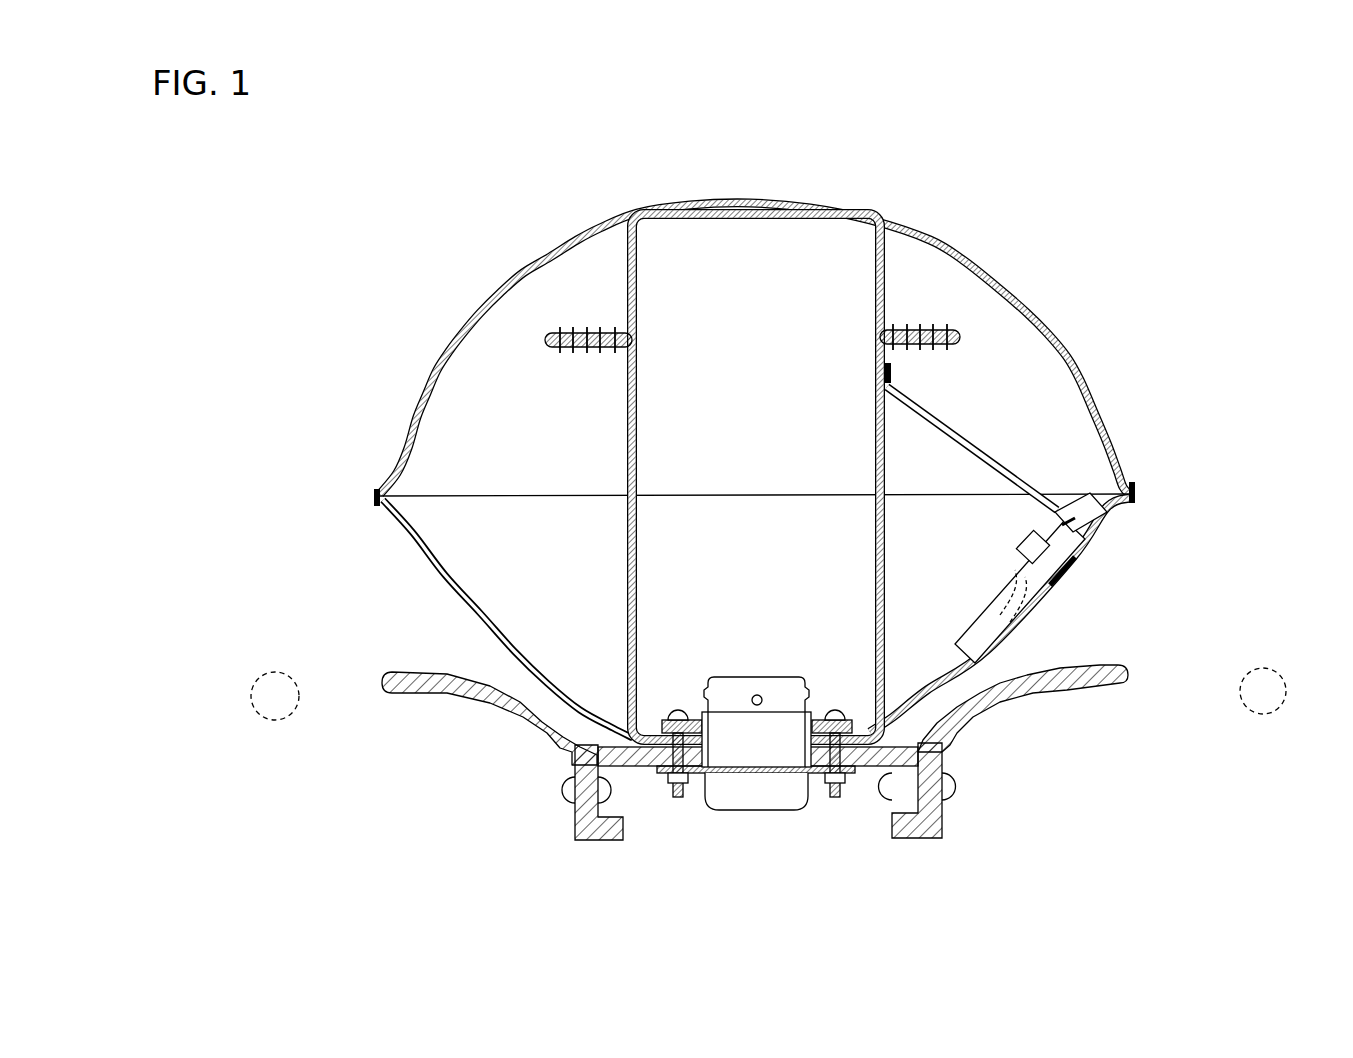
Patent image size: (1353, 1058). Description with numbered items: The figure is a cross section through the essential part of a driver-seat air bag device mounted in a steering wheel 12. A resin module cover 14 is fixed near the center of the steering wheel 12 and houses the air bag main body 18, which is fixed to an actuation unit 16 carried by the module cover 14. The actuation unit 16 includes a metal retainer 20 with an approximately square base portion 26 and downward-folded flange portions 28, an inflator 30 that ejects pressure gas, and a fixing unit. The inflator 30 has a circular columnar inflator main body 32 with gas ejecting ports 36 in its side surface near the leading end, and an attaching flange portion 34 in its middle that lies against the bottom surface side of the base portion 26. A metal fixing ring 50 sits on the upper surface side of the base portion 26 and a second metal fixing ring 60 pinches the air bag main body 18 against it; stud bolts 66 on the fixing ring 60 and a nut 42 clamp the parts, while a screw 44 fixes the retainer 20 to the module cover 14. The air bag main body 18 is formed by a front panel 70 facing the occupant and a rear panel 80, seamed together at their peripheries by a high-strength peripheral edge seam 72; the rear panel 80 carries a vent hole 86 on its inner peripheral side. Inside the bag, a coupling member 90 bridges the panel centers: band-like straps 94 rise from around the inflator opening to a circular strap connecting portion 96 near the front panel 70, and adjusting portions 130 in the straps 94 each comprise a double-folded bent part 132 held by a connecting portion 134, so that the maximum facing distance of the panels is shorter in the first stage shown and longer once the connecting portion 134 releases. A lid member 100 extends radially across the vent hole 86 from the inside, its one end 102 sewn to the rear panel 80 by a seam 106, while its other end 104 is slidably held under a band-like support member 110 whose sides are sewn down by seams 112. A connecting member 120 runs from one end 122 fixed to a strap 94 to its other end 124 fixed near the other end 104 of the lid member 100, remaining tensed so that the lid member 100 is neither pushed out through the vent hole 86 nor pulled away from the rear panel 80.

The steering wheel 12 is at (273, 720).
The module cover 14 is at (458, 690).
The actuation unit 16 is at (756, 715).
The air bag main body 18 is at (766, 456).
The retainer 20 is at (880, 768).
The base portion 26 is at (647, 767).
The flange portions 28 is at (944, 818).
The inflator 30 is at (756, 746).
The inflator main body 32 is at (760, 810).
The attaching flange portion 34 is at (773, 774).
The gas ejecting ports 36 is at (758, 694).
The nut 42 is at (670, 800).
The screw 44 is at (565, 797).
The fixing ring 50 is at (928, 733).
The fixing ring 60 is at (822, 718).
The stud bolts 66 is at (679, 797).
The front panel 70 is at (455, 345).
The peripheral edge seam 72 is at (378, 488).
The rear panel 80 is at (415, 540).
The vent hole 86 is at (1052, 588).
The coupling member 90 is at (709, 477).
The straps 94 is at (627, 553).
The strap connecting portion 96 is at (780, 220).
The lid member 100 is at (1035, 536).
The one end 102 is at (965, 635).
The other end 104 is at (1093, 500).
The seam 106 is at (980, 626).
The support member 110 is at (1073, 562).
The seam 112 is at (1024, 540).
The connecting member 120 is at (983, 456).
The one end 122 is at (892, 375).
The other end 124 is at (1073, 492).
The adjusting portions 130 is at (751, 305).
The bent part 132 is at (578, 352).
The connecting portion 134 is at (561, 333).